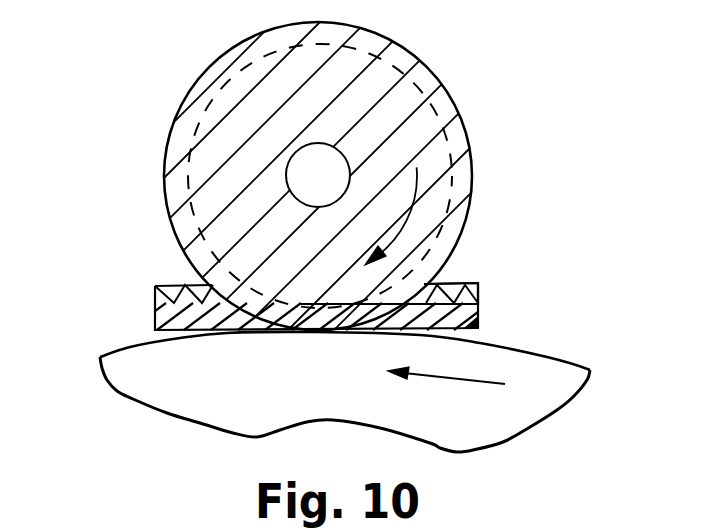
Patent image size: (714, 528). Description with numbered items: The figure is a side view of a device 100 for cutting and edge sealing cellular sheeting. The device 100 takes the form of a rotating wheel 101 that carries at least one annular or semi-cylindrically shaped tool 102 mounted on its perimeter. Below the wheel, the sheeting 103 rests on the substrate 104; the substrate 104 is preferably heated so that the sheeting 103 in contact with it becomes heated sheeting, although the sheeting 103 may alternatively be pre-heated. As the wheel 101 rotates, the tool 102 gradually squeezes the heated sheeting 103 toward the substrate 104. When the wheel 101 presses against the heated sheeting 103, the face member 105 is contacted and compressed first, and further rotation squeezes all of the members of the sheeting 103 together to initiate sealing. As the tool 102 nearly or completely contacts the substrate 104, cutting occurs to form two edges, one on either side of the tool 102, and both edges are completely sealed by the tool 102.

The device 100 is at (151, 92).
The rotating wheel 101 is at (372, 80).
The tool 102 is at (470, 163).
The sheeting 103 is at (147, 285).
The substrate 104 is at (135, 377).
The face member 105 is at (463, 282).